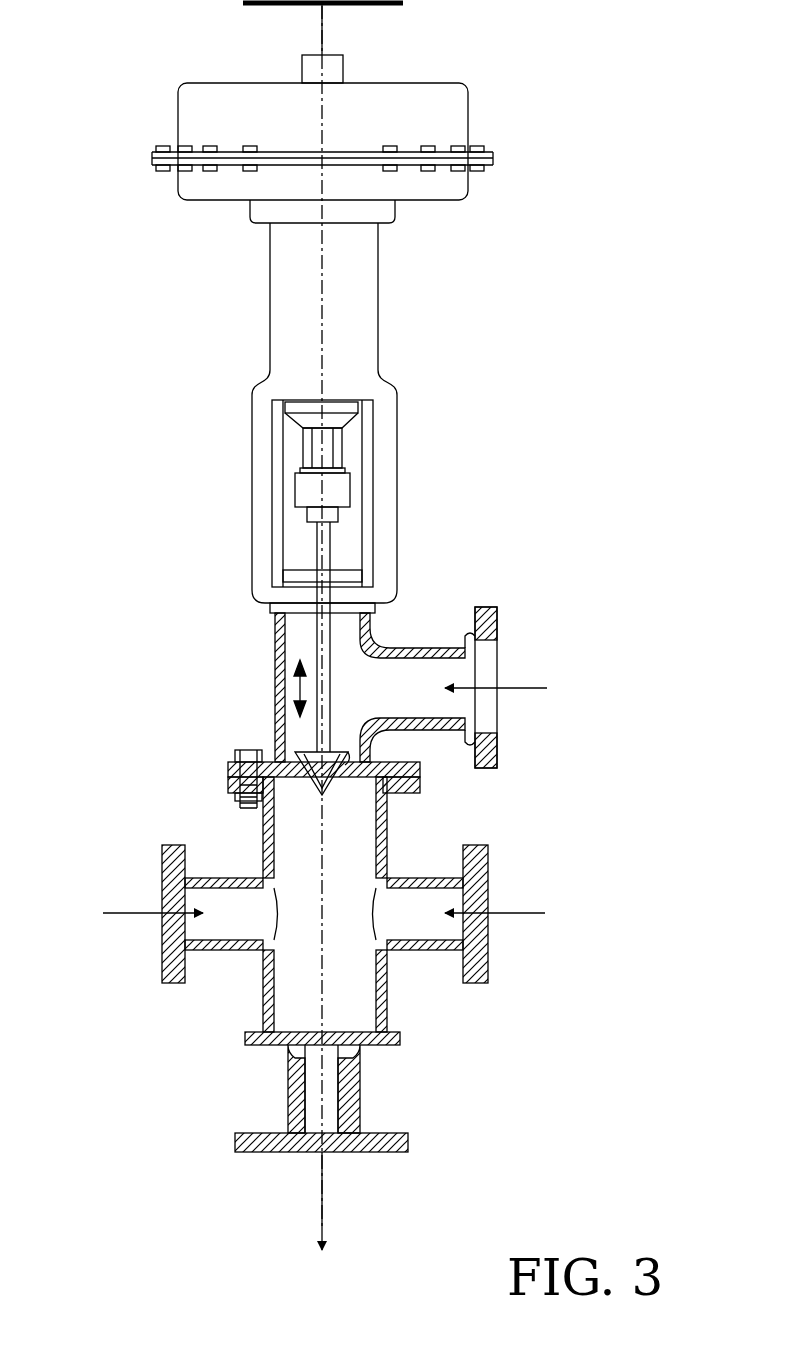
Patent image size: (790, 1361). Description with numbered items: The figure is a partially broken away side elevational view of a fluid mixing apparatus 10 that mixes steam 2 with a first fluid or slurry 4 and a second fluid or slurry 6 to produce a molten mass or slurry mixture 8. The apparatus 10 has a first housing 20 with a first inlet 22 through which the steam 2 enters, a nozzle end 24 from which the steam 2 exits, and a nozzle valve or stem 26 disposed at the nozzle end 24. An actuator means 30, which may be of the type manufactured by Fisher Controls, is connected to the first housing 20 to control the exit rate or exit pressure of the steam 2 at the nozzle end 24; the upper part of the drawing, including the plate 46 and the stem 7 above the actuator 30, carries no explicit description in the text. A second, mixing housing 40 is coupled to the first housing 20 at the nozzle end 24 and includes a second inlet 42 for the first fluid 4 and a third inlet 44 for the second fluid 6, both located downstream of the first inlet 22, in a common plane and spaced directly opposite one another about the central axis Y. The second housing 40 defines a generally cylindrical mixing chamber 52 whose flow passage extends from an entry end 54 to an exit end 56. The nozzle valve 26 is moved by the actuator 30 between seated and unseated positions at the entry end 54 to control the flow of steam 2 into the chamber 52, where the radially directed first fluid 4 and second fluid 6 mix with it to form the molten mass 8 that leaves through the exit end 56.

The fluid mixing apparatus 10 is at (522, 122).
The indicator plate 46 is at (362, 5).
The actuator stem 7 is at (322, 17).
The central axis Y is at (325, 72).
The actuator means 30 is at (442, 202).
The first housing 20 is at (367, 635).
The first inlet 22 is at (457, 702).
The steam 2 is at (505, 688).
The nozzle valve 26 is at (303, 747).
The entry end 54 is at (367, 752).
The second housing 40 is at (398, 795).
The nozzle end 24 is at (268, 757).
The mixing chamber 52 is at (363, 1000).
The second inlet 42 is at (170, 933).
The first fluid 4 is at (120, 913).
The third inlet 44 is at (472, 933).
The second fluid 6 is at (520, 913).
The exit end 56 is at (332, 1140).
The molten mass 8 is at (320, 1198).